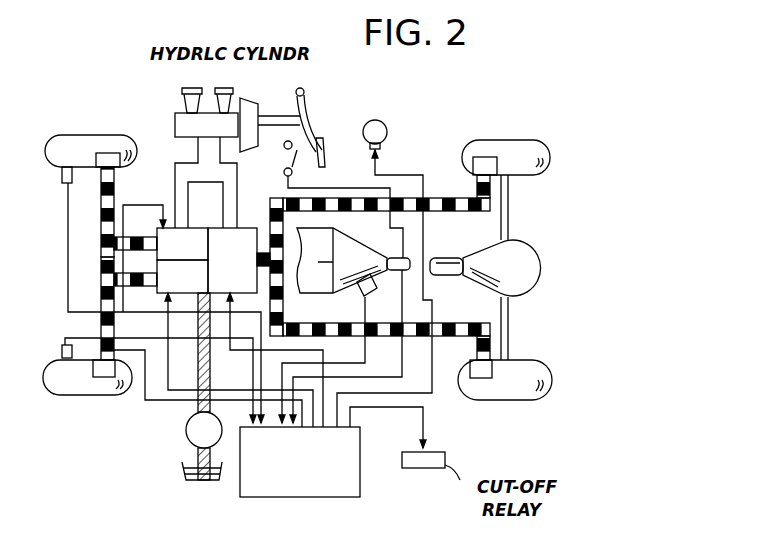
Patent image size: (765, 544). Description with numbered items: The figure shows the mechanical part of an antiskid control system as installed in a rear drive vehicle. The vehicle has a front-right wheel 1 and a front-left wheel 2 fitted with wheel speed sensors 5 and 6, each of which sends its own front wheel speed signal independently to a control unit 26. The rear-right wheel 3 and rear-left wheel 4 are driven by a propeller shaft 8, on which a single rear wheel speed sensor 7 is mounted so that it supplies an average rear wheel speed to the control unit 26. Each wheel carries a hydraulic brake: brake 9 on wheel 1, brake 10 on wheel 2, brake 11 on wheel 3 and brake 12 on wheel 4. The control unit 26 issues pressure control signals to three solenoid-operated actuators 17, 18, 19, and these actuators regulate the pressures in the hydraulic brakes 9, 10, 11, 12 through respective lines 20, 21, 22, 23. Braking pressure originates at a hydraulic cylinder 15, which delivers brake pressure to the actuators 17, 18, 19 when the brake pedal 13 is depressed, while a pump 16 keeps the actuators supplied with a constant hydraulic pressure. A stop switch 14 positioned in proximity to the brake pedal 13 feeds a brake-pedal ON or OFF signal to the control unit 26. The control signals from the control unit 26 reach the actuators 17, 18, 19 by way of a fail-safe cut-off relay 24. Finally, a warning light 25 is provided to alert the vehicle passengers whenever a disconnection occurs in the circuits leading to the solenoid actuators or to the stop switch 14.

The front-right wheel 1 is at (82, 135).
The front-left wheel 2 is at (78, 400).
The rear-right wheel 3 is at (522, 140).
The rear-left wheel 4 is at (513, 395).
The wheel speed sensor 5 is at (60, 182).
The wheel speed sensor 6 is at (62, 353).
The rear wheel speed sensor 7 is at (372, 287).
The propeller shaft 8 is at (390, 257).
The hydraulic brake 9 is at (112, 153).
The hydraulic brake 10 is at (107, 400).
The hydraulic brake 11 is at (485, 157).
The hydraulic brake 12 is at (482, 378).
The brake pedal 13 is at (307, 127).
The stop switch 14 is at (285, 157).
The hydraulic cylinder 15 is at (173, 122).
The pump 16 is at (185, 438).
The solenoid-operated actuator 17 is at (182, 244).
The solenoid-operated actuator 18 is at (182, 276).
The solenoid-operated actuator 19 is at (232, 260).
The line 20 is at (112, 195).
The line 21 is at (98, 300).
The line 22 is at (447, 198).
The line 23 is at (438, 336).
The fail-safe cut-off relay 24 is at (417, 468).
The warning light 25 is at (378, 120).
The control unit 26 is at (257, 500).